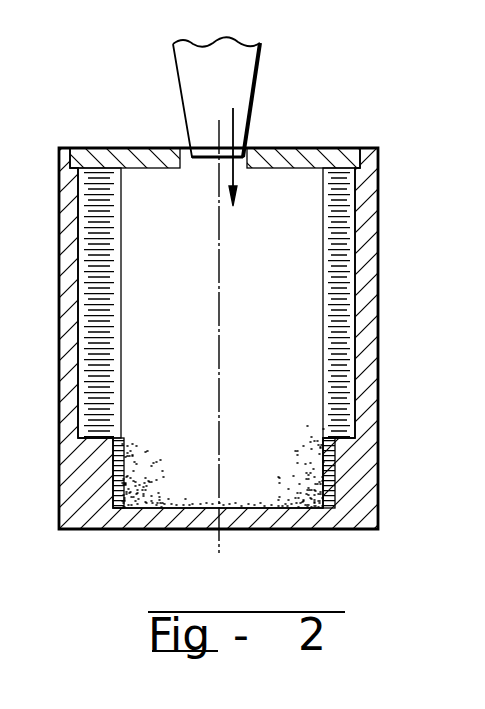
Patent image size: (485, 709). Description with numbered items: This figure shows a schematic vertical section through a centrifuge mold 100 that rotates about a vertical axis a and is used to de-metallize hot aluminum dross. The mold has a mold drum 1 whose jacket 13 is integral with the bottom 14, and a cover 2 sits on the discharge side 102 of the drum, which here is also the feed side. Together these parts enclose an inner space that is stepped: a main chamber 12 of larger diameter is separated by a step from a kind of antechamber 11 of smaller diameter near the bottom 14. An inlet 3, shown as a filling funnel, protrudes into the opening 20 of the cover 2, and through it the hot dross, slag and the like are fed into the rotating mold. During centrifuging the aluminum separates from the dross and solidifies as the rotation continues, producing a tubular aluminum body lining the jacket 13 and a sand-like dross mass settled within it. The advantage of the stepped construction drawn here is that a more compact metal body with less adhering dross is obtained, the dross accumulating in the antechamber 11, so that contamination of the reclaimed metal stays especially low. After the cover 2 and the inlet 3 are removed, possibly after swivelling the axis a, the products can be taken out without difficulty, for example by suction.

The mold drum 1 is at (370, 171).
The cover 2 is at (282, 156).
The inlet 3 is at (257, 80).
The antechamber 11 is at (224, 473).
The main chamber 12 is at (222, 339).
The jacket 13 is at (367, 373).
The bottom 14 is at (121, 519).
The opening 20 is at (183, 170).
The centrifuge mold 100 is at (50, 140).
The discharge side 102 is at (145, 180).
The axis a is at (232, 342).